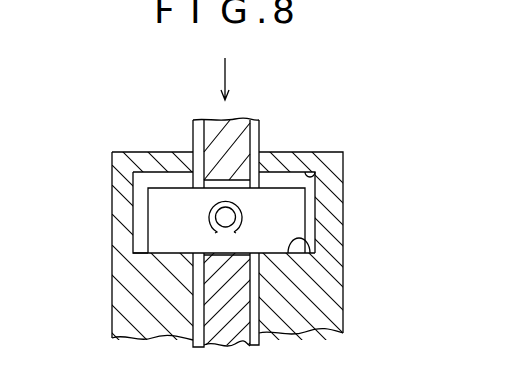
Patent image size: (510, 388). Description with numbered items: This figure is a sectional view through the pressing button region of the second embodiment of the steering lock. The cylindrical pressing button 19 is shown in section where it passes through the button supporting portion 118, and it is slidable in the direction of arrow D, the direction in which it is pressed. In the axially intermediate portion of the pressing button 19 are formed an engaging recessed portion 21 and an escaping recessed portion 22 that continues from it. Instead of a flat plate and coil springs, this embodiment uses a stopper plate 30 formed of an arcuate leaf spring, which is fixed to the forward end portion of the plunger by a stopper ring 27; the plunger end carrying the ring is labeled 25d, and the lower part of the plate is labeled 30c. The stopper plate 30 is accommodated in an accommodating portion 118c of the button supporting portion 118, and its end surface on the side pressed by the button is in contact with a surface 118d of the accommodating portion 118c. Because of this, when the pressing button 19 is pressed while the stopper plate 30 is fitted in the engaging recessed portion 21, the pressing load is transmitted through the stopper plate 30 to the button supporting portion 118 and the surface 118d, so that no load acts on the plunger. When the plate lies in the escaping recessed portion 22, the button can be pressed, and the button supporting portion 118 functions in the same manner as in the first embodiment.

The pressing button 19 is at (250, 121).
The escaping recessed portion 22 is at (228, 180).
The engaging recessed portion 21 is at (237, 258).
The button supporting portion 118 is at (334, 152).
The accommodating portion 118c is at (318, 173).
The surface of the accommodating portion 118d is at (300, 243).
The stopper plate 30 is at (158, 203).
The plate bottom edge 30c is at (142, 262).
The stopper ring 27 is at (241, 213).
The pin 25d is at (228, 219).
The arrow D is at (224, 72).